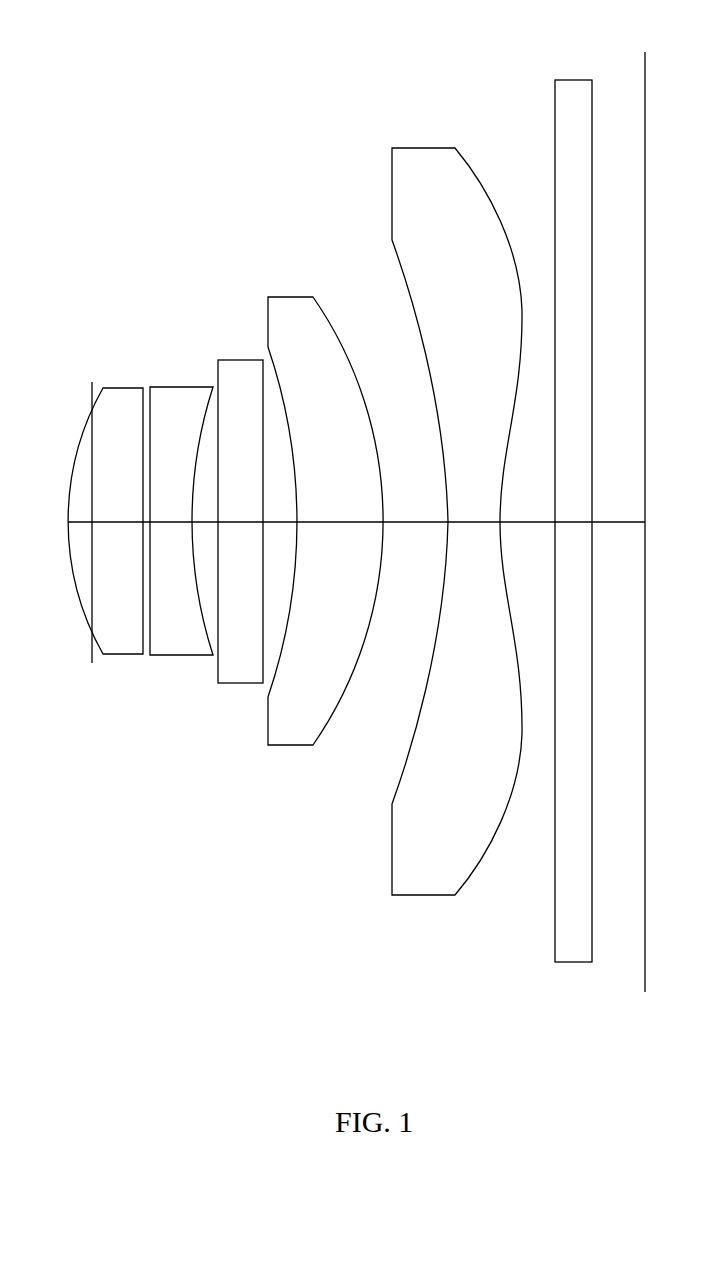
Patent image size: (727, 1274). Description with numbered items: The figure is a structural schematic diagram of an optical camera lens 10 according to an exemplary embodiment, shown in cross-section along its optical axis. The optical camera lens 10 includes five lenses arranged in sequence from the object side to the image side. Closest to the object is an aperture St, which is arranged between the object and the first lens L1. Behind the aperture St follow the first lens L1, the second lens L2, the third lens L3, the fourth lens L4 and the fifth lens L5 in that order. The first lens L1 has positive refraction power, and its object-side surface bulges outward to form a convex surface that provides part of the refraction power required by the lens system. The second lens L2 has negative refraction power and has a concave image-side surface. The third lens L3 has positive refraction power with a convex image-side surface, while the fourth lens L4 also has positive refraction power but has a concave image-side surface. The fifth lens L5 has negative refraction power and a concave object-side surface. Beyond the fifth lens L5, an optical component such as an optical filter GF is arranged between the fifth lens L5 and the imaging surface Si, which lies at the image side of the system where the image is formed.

The optical camera lens 10 is at (356, 501).
The aperture St is at (69, 514).
The first lens L1 is at (105, 494).
The second lens L2 is at (181, 495).
The third lens L3 is at (239, 496).
The fourth lens L4 is at (325, 495).
The fifth lens L5 is at (457, 499).
The optical filter GF is at (565, 495).
The imaging surface Si is at (650, 501).